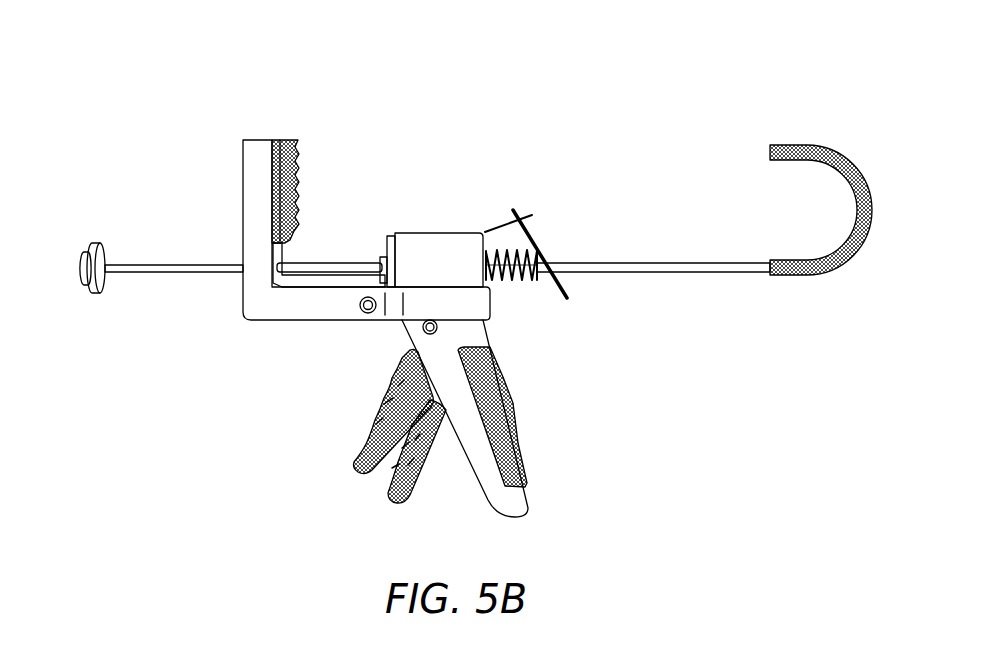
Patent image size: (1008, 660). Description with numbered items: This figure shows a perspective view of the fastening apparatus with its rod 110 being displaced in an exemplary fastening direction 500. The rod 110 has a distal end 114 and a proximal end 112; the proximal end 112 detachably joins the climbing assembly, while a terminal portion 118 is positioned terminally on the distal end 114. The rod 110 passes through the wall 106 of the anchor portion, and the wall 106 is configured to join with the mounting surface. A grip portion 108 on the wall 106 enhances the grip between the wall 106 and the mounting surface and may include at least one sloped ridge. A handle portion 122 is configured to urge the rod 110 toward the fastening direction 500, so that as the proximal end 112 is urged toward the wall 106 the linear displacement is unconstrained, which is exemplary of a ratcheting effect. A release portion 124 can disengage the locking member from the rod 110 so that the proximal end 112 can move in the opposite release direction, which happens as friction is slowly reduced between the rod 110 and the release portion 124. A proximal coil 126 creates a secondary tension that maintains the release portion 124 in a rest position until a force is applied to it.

The fastening direction 500 is at (205, 86).
The wall 106 is at (250, 190).
The grip portion 108 is at (295, 177).
The rod 110 is at (338, 262).
The proximal end 112 is at (762, 267).
The distal end 114 is at (157, 267).
The terminal portion 118 is at (92, 243).
The handle portion 122 is at (365, 477).
The release portion 124 is at (567, 298).
The proximal coil 126 is at (507, 283).